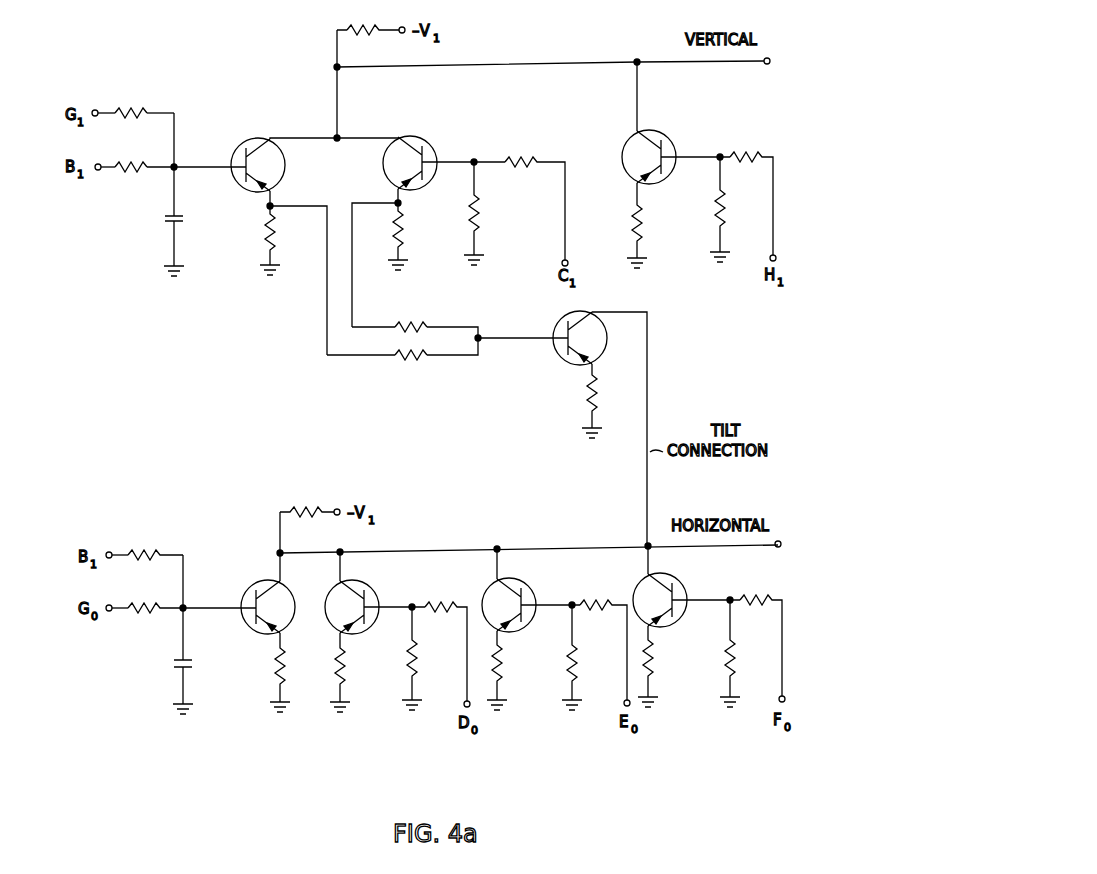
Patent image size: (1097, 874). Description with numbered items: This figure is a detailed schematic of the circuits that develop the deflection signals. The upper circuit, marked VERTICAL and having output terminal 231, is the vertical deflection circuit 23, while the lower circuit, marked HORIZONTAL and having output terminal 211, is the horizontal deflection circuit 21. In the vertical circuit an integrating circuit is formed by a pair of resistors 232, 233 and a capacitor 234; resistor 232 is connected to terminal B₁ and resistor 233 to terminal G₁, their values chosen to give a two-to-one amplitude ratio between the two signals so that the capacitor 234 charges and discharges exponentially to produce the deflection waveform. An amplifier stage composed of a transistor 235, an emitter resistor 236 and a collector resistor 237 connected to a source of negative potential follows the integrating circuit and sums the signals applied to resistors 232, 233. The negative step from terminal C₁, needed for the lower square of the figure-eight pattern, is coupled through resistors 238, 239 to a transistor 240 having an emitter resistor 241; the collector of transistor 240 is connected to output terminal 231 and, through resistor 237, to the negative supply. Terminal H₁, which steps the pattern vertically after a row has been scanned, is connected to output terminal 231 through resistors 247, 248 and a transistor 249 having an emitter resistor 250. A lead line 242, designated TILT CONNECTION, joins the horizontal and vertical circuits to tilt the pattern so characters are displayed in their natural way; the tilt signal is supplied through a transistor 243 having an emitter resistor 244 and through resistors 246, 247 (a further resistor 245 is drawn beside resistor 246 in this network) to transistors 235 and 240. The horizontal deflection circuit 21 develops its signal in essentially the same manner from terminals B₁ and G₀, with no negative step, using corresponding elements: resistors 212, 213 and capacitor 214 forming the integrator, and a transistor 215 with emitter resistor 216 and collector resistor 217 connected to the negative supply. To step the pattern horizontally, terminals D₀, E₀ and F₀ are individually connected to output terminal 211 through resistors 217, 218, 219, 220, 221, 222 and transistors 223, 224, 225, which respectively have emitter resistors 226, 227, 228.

The horizontal deflection circuit 21 is at (432, 757).
The vertical deflection circuit 23 is at (394, 380).
The output terminal 211 is at (777, 548).
The resistor 212 is at (145, 604).
The resistor 213 is at (145, 550).
The capacitor 214 is at (194, 665).
The transistor 215 is at (248, 592).
The emitter resistor 216 is at (275, 675).
The resistor 217 is at (300, 505).
The resistor 218 is at (408, 668).
The resistor 219 is at (596, 598).
The resistor 220 is at (569, 670).
The resistor 221 is at (746, 594).
The resistor 222 is at (722, 665).
The transistor 223 is at (368, 590).
The transistor 224 is at (522, 586).
The transistor 225 is at (684, 582).
The emitter resistor 226 is at (336, 671).
The emitter resistor 227 is at (505, 667).
The emitter resistor 228 is at (656, 666).
The output terminal 231 is at (764, 65).
The resistor 232 is at (143, 161).
The resistor 233 is at (143, 107).
The capacitor 234 is at (184, 219).
The transistor 235 is at (240, 146).
The emitter resistor 236 is at (266, 238).
The collector resistor 237 is at (355, 28).
The resistor 238 is at (512, 156).
The resistor 239 is at (483, 214).
The transistor 240 is at (404, 142).
The emitter resistor 241 is at (396, 238).
The lead line 242 is at (647, 503).
The transistor 243 is at (557, 329).
The emitter resistor 244 is at (586, 406).
The resistor 245 is at (417, 322).
The resistor 246 is at (425, 362).
The resistor 247 is at (746, 150).
The resistor 248 is at (713, 210).
The transistor 249 is at (630, 142).
The emitter resistor 250 is at (633, 224).